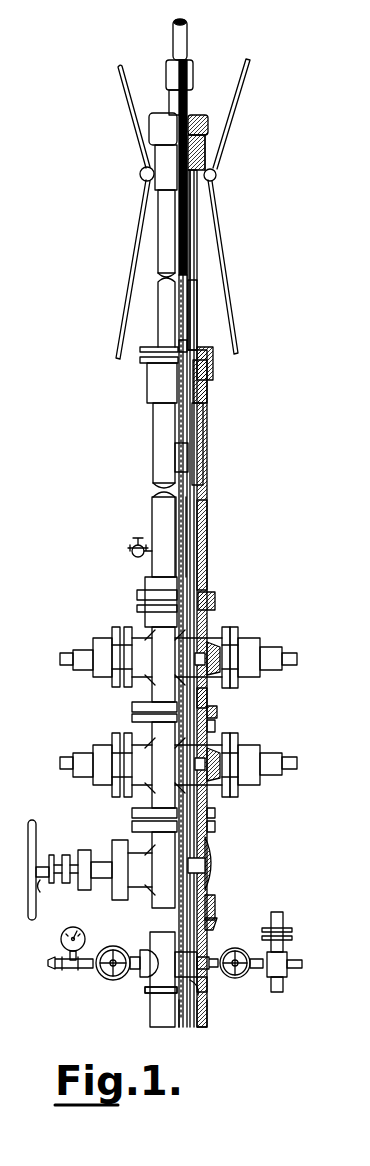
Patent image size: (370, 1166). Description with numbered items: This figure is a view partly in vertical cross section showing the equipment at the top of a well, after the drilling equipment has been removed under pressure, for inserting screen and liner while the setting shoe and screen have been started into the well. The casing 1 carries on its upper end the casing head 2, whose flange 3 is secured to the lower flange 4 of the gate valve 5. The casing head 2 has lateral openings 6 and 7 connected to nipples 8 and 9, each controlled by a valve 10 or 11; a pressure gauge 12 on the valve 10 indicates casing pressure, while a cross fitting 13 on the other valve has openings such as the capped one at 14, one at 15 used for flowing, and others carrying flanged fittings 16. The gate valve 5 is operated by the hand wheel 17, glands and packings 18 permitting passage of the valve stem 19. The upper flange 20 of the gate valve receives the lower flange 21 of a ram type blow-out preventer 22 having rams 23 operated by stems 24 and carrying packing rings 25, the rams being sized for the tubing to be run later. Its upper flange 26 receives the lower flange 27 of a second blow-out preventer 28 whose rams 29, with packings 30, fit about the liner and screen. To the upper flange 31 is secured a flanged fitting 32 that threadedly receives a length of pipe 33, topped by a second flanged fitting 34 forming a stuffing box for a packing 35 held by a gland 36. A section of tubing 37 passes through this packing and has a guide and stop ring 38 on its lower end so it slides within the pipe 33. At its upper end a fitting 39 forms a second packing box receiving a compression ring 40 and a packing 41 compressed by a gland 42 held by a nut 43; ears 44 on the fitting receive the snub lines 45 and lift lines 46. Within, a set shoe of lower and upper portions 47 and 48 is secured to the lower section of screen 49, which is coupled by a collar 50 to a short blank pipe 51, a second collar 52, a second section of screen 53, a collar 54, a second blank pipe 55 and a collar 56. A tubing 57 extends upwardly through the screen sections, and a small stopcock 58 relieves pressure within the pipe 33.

The casing 1 is at (205, 1025).
The casing head 2 is at (148, 990).
The flange 3 is at (212, 925).
The lower flange 4 is at (210, 905).
The gate valve 5 is at (214, 860).
The lateral opening 6 is at (135, 972).
The lateral opening 7 is at (207, 980).
The nipple 8 is at (143, 952).
The nipple 9 is at (225, 955).
The valve 10 is at (100, 972).
The valve 11 is at (245, 975).
The pressure gauge 12 is at (60, 939).
The fitting 13 is at (285, 955).
The capped opening 14 is at (283, 985).
The flowing opening 15 is at (302, 963).
The flanged fitting 16 is at (283, 922).
The hand wheel 17 is at (36, 845).
The glands and packings 18 is at (70, 865).
The valve stem 19 is at (50, 880).
The upper flange 20 is at (212, 828).
The lower flange 21 is at (212, 815).
The blow-out preventer 22 is at (208, 735).
The rams 23 is at (215, 760).
The stems 24 is at (297, 762).
The packing rings 25 is at (197, 762).
The upper flange 26 is at (213, 712).
The lower flange 27 is at (133, 705).
The second blow-out preventer 28 is at (157, 628).
The rams 29 is at (235, 640).
The packings 30 is at (210, 650).
The upper flange 31 is at (137, 608).
The flanged fitting 32 is at (142, 593).
The pipe 33 is at (205, 545).
The second flanged fitting 34 is at (207, 385).
The packing 35 is at (210, 365).
The gland 36 is at (140, 357).
The tubing 37 is at (200, 293).
The guide and stop ring 38 is at (203, 445).
The fitting 39 is at (210, 160).
The compression ring 40 is at (218, 175).
The packing 41 is at (200, 145).
The gland 42 is at (205, 125).
The nut 43 is at (159, 128).
The ears 44 is at (140, 176).
The snub lines 45 is at (135, 250).
The lift lines 46 is at (125, 97).
The lower portion of set shoe 47 is at (182, 1020).
The upper portion of set shoe 48 is at (198, 995).
The lower section of screen 49 is at (205, 870).
The collar 50 is at (207, 567).
The blank pipe 51 is at (185, 520).
The second collar 52 is at (188, 460).
The second section of screen 53 is at (185, 345).
The collar 54 is at (195, 190).
The second section of blank pipe 55 is at (180, 103).
The collar 56 is at (178, 75).
The tubing 57 is at (187, 45).
The stopcock 58 is at (130, 548).